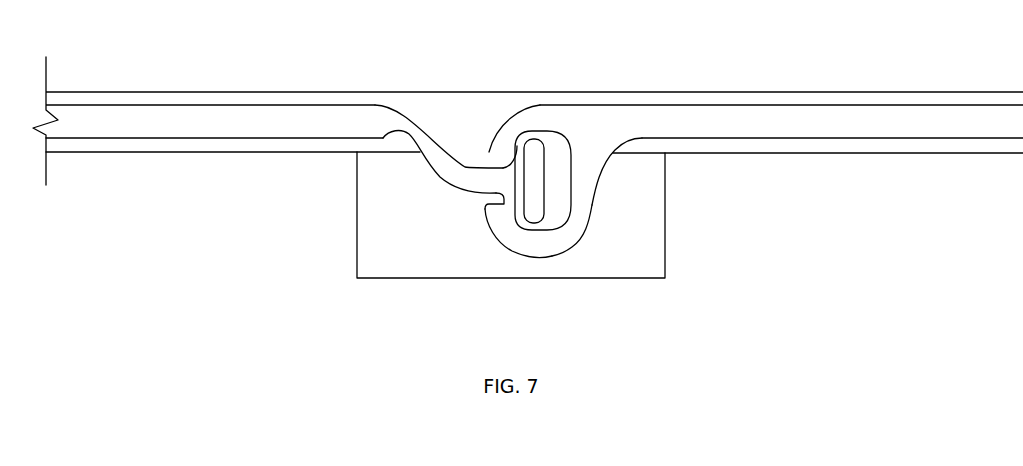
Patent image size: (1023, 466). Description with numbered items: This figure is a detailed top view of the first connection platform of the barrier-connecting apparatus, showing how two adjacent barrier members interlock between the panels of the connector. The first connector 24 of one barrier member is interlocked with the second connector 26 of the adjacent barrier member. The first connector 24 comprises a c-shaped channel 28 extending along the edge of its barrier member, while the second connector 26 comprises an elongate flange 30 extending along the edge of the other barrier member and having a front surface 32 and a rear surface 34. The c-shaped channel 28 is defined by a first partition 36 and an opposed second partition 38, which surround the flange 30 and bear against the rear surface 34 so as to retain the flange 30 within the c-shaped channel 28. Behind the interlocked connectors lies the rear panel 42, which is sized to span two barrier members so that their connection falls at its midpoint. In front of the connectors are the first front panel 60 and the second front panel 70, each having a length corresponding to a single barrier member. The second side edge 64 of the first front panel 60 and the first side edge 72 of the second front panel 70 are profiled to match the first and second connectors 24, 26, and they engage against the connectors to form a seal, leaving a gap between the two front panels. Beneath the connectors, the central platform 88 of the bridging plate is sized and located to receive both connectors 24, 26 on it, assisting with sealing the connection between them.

The first connector 24 is at (548, 128).
The second connector 26 is at (521, 166).
The c-shaped channel 28 is at (560, 208).
The elongate flange 30 is at (495, 233).
The front surface 32 is at (545, 172).
The rear surface 34 is at (496, 159).
The first partition 36 is at (528, 242).
The second partition 38 is at (522, 123).
The rear panel 42 is at (283, 92).
The first front panel 60 is at (204, 153).
The second side edge 64 is at (418, 158).
The second front panel 70 is at (918, 153).
The first side edge 72 is at (633, 135).
The central platform 88 is at (635, 225).